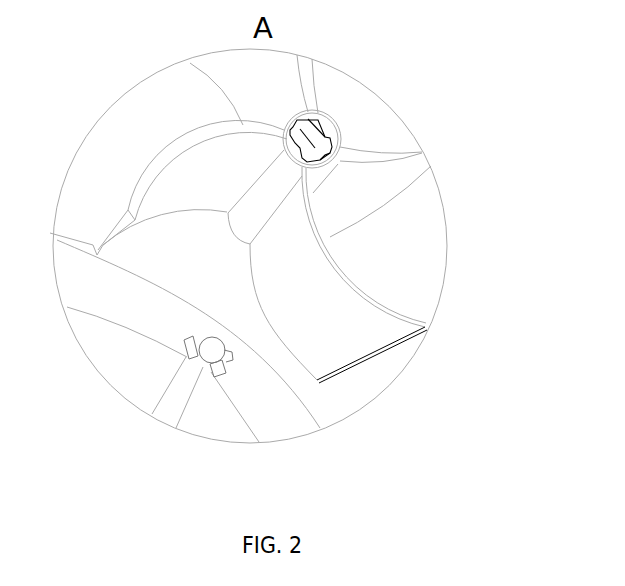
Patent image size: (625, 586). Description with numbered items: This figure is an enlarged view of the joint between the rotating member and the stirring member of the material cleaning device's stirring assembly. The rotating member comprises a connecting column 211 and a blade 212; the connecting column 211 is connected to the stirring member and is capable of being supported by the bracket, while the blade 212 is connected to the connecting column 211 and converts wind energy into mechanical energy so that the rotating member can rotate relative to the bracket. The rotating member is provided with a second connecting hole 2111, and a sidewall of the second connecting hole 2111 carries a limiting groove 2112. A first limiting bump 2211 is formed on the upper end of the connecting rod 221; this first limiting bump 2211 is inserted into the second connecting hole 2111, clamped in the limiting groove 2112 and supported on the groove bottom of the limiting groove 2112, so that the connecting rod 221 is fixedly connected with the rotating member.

The connecting column 211 is at (260, 183).
The second connecting hole 2111 is at (317, 140).
The limiting groove 2112 is at (322, 160).
The blade 212 is at (355, 328).
The connecting rod 221 is at (186, 380).
The first limiting bump 2211 is at (218, 370).